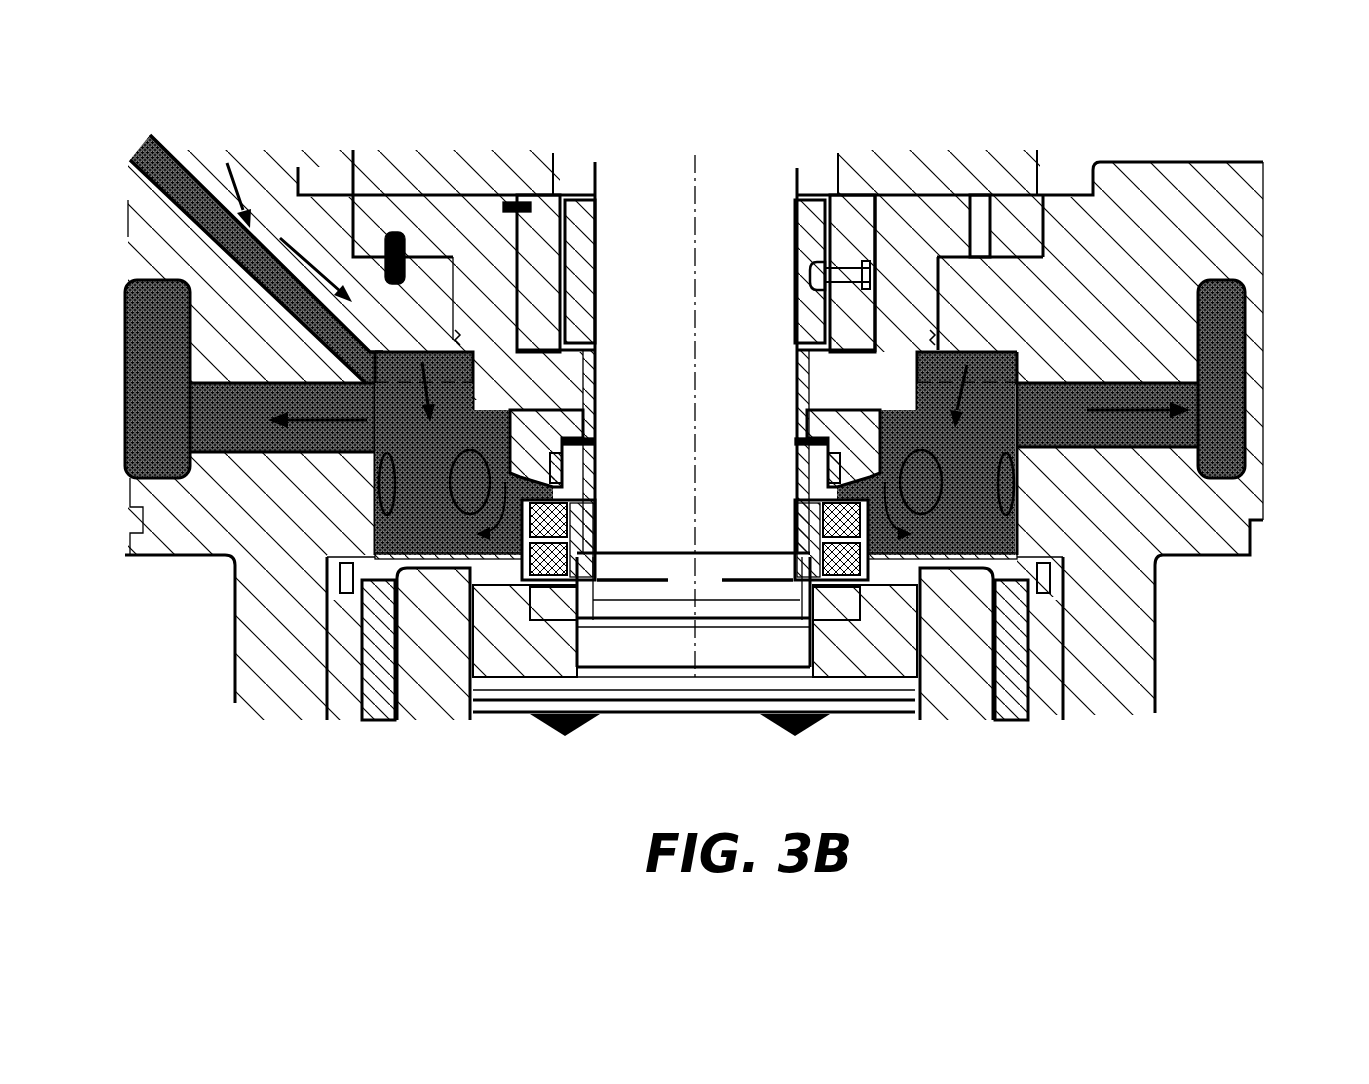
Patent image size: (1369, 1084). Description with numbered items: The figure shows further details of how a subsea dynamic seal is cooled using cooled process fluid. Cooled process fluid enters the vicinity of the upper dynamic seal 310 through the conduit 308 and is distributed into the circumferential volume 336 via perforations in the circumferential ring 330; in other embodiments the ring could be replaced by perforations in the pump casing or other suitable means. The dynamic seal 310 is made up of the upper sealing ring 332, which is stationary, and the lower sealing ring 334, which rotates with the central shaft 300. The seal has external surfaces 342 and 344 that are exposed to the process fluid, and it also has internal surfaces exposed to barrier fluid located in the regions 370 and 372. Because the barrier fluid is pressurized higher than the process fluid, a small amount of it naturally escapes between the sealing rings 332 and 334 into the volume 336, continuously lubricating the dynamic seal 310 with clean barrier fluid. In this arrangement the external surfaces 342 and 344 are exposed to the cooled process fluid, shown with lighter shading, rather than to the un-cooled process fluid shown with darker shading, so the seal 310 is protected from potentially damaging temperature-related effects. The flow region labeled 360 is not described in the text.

The central shaft 300 is at (760, 332).
The conduit 308 is at (253, 165).
The upper dynamic seal 310 is at (568, 770).
The circumferential ring 330 is at (382, 363).
The upper sealing ring 332 is at (800, 483).
The lower sealing ring 334 is at (812, 562).
The circumferential volume 336 is at (378, 527).
The external surface 342 is at (497, 497).
The external surface 344 is at (473, 573).
The outlet port 360 is at (1230, 350).
The barrier fluid region 370 is at (793, 510).
The barrier fluid region 372 is at (797, 378).